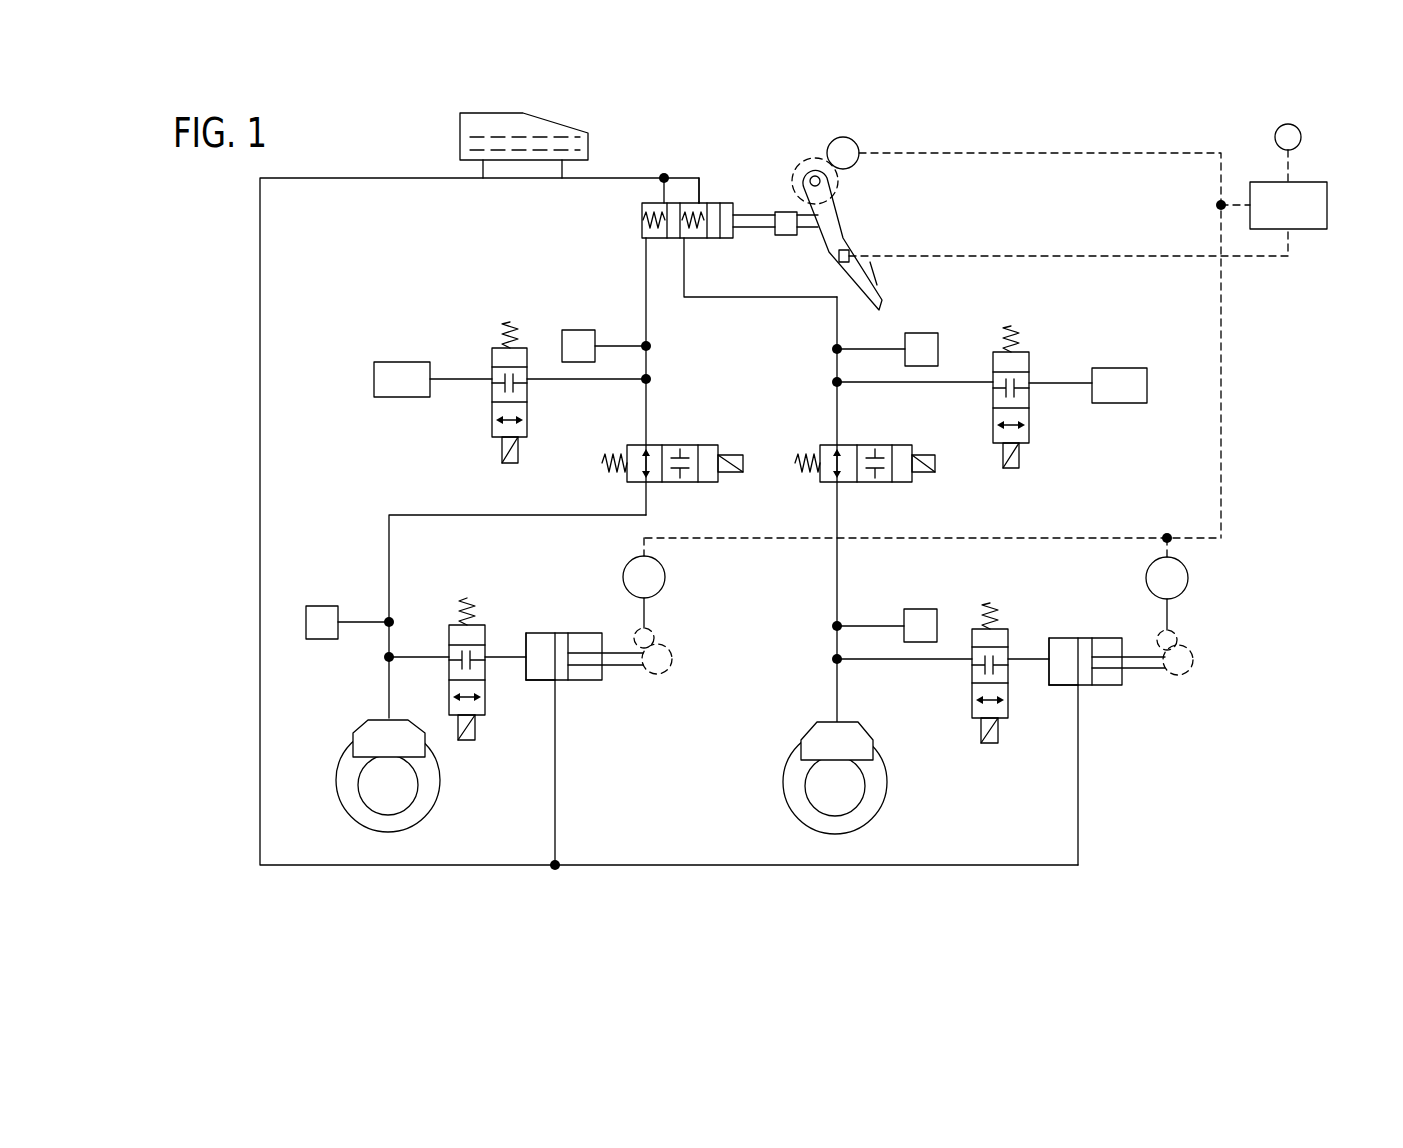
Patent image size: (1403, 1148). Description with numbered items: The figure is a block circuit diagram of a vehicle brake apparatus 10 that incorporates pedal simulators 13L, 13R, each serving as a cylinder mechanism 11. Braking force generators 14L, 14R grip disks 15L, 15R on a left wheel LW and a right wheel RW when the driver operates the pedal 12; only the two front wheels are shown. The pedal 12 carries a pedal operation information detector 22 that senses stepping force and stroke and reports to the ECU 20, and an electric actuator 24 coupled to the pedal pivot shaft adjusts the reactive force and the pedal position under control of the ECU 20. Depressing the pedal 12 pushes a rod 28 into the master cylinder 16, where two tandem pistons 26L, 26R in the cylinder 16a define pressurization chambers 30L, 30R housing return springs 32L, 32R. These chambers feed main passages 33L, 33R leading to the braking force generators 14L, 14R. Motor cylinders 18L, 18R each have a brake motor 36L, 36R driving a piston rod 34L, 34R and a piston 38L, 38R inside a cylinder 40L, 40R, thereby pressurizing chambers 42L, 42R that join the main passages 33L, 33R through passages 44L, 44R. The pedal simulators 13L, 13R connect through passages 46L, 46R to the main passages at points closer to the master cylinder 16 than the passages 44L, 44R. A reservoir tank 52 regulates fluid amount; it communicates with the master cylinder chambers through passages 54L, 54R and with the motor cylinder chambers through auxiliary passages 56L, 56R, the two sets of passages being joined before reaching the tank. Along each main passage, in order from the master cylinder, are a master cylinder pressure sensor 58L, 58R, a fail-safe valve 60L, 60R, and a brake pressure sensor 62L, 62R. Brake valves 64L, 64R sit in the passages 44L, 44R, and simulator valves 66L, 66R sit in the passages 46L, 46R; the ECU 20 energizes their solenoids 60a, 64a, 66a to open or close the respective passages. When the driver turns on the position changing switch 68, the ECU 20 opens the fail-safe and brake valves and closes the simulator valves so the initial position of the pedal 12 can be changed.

The brake apparatus 10 is at (1212, 121).
The cylinder mechanism 11 is at (817, 487).
The pedal 12 is at (878, 292).
The pedal simulator 13L is at (384, 350).
The pedal simulator 13R is at (1145, 357).
The braking force generator 14L is at (361, 735).
The braking force generator 14R is at (808, 738).
The disk 15L is at (441, 780).
The disk 15R is at (889, 782).
The master cylinder 16 is at (742, 150).
The cylinder 16a is at (677, 202).
The motor cylinder 18L is at (558, 626).
The motor cylinder 18R is at (1082, 631).
The ECU 20 is at (1327, 200).
The pedal operation information detector 22 is at (849, 251).
The electric actuator 24 is at (853, 142).
The piston 26L is at (672, 240).
The piston 26R is at (714, 240).
The rod 28 is at (775, 211).
The pressurization chamber 30L is at (651, 236).
The pressurization chamber 30R is at (697, 240).
The return spring 32L is at (643, 220).
The return spring 32R is at (717, 205).
The main passage 33L is at (648, 516).
The main passage 33R is at (840, 524).
The piston rod 34L is at (620, 673).
The piston rod 34R is at (1142, 676).
The brake motor 36L is at (666, 577).
The brake motor 36R is at (1189, 578).
The piston 38L is at (566, 692).
The piston 38R is at (1090, 693).
The cylinder 40L is at (528, 689).
The cylinder 40R is at (1050, 690).
The pressurization chamber 42L is at (536, 641).
The pressurization chamber 42R is at (1060, 645).
The passage 44L is at (410, 661).
The passage 44R is at (886, 663).
The passage 46L is at (450, 377).
The passage 46R is at (955, 380).
The reservoir tank 52 is at (459, 124).
The passage 54L is at (661, 200).
The passage 54R is at (705, 200).
The auxiliary passage 56L is at (557, 794).
The auxiliary passage 56R is at (1080, 806).
The master cylinder pressure sensor 58L is at (556, 336).
The master cylinder pressure sensor 58R is at (926, 333).
The fail-safe valve 60L is at (683, 444).
The fail-safe valve 60R is at (875, 444).
The solenoid 60a is at (732, 454).
The brake pressure sensor 62L is at (309, 606).
The brake pressure sensor 62R is at (922, 609).
The brake valve 64L is at (447, 634).
The brake valve 64R is at (970, 676).
The solenoid 64a is at (478, 738).
The simulator valve 66L is at (528, 436).
The simulator valve 66R is at (1030, 441).
The solenoid 66a is at (519, 455).
The position changing switch 68 is at (1301, 137).
The left wheel LW is at (440, 807).
The right wheel RW is at (887, 811).